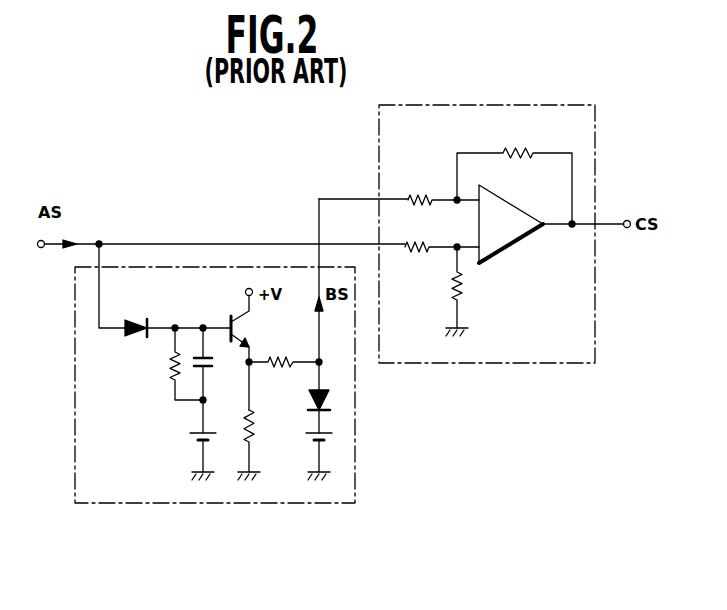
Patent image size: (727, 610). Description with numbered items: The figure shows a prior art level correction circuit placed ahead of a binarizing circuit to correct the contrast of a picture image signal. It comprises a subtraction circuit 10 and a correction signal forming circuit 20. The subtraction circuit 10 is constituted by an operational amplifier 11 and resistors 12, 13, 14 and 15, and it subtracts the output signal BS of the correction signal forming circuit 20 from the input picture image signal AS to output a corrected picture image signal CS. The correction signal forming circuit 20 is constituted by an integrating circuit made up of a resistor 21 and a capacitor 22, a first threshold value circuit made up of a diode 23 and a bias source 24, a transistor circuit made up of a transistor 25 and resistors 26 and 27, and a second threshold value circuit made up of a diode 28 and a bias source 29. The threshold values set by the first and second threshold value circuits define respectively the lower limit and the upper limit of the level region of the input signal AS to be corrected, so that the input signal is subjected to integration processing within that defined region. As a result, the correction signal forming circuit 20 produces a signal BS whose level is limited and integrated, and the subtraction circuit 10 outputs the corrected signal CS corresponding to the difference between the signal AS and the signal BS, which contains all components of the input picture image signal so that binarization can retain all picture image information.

The subtraction circuit 10 is at (487, 363).
The operational amplifier 11 is at (523, 237).
The resistor 12 is at (417, 253).
The resistor 13 is at (415, 193).
The resistor 14 is at (520, 148).
The resistor 15 is at (465, 288).
The correction signal forming circuit 20 is at (205, 505).
The resistor 21 is at (170, 362).
The capacitor 22 is at (210, 366).
The diode 23 is at (135, 318).
The bias source 24 is at (190, 432).
The transistor 25 is at (226, 322).
The resistor 26 is at (262, 422).
The resistor 27 is at (284, 356).
The diode 28 is at (332, 395).
The bias source 29 is at (332, 440).